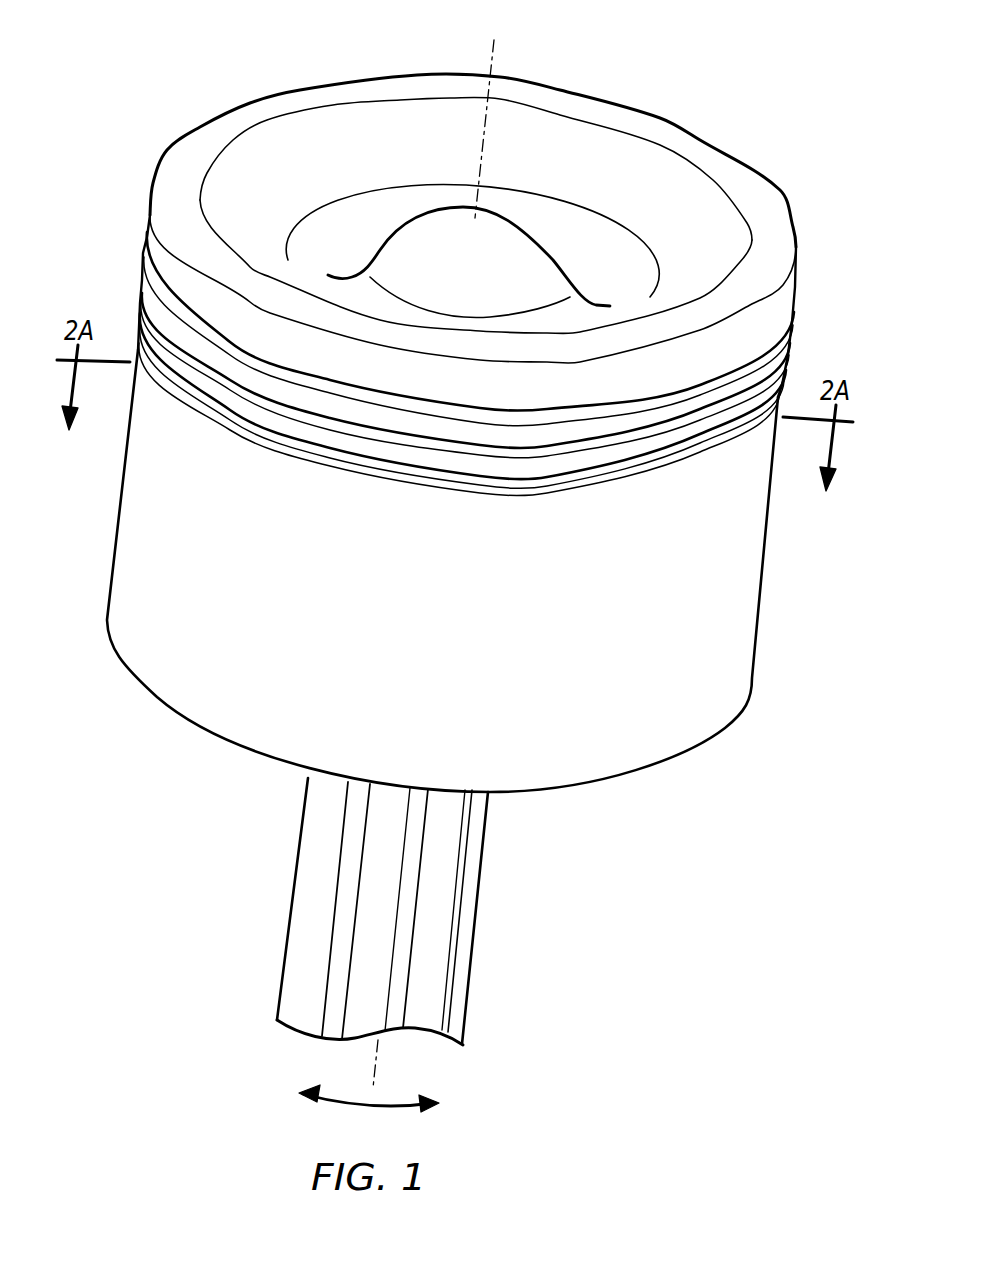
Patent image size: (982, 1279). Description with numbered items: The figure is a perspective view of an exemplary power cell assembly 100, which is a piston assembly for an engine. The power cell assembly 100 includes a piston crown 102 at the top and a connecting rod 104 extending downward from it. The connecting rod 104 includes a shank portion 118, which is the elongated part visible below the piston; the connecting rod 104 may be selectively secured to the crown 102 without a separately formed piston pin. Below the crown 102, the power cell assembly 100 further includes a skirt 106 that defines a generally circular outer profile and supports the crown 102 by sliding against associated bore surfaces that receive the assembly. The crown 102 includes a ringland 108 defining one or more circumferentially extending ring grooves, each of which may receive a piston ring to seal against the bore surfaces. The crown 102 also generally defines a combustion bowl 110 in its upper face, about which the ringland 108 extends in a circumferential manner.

The power cell assembly 100 is at (114, 102).
The piston crown 102 is at (760, 203).
The connecting rod 104 is at (504, 836).
The skirt 106 is at (743, 628).
The ringland 108 is at (801, 297).
The combustion bowl 110 is at (589, 196).
The shank portion 118 is at (300, 958).